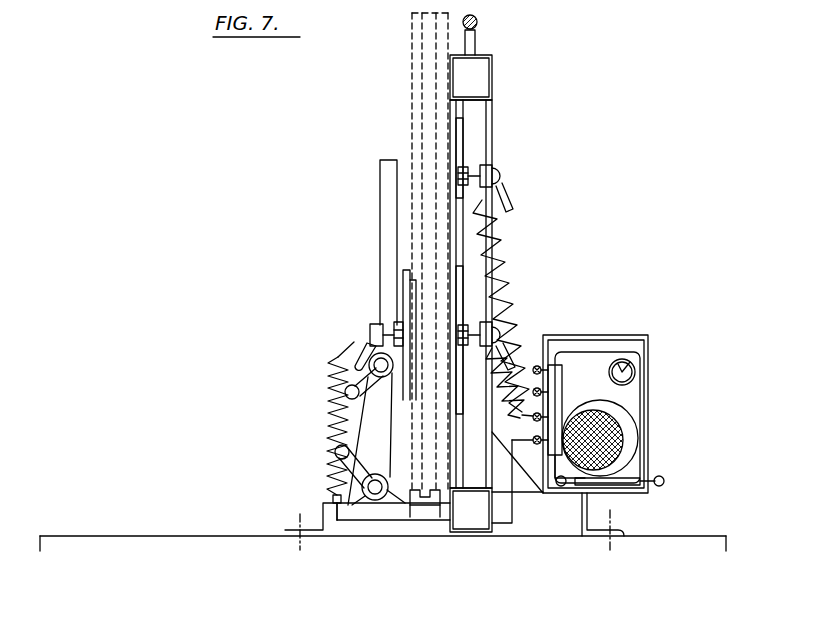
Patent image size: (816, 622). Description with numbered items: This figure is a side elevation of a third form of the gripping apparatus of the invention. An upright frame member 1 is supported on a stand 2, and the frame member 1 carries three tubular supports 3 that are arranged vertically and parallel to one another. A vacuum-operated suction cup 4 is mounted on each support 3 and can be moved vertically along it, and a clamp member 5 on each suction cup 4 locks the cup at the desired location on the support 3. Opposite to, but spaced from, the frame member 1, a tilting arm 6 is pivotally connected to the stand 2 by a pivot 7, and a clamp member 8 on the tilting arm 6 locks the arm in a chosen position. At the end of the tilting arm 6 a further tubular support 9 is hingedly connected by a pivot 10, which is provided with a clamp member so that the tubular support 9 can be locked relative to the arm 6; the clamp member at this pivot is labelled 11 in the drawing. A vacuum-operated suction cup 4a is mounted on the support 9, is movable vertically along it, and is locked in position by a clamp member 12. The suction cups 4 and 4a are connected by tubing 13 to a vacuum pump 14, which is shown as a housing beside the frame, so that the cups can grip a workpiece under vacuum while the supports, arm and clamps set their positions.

The upright frame member 1 is at (490, 129).
The stand 2 is at (563, 513).
The tubular support 3 is at (473, 153).
The vacuum-operated suction cup 4 is at (458, 122).
The vacuum-operated suction cup 4a is at (405, 290).
The clamp member 5 is at (505, 177).
The tilting arm 6 is at (375, 455).
The pivot 7 is at (370, 497).
The clamp member 8 is at (385, 491).
The tubular support 9 is at (382, 173).
The pivot 10 is at (375, 366).
The ball link 11 is at (345, 392).
The clamp member 12 is at (371, 331).
The tubing 13 is at (505, 225).
The vacuum pump 14 is at (633, 366).